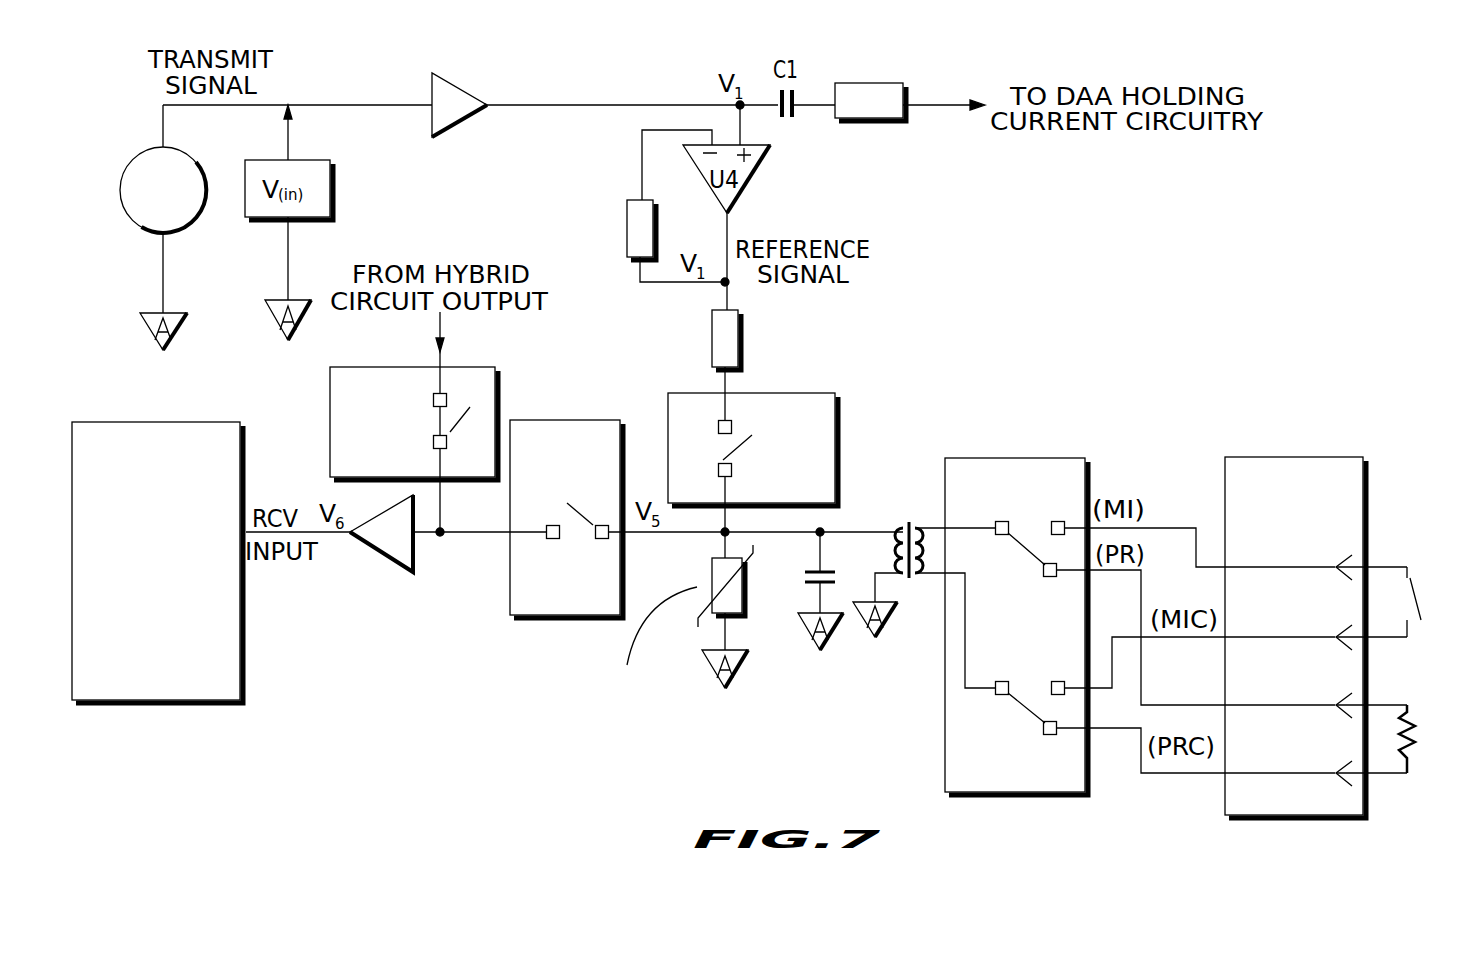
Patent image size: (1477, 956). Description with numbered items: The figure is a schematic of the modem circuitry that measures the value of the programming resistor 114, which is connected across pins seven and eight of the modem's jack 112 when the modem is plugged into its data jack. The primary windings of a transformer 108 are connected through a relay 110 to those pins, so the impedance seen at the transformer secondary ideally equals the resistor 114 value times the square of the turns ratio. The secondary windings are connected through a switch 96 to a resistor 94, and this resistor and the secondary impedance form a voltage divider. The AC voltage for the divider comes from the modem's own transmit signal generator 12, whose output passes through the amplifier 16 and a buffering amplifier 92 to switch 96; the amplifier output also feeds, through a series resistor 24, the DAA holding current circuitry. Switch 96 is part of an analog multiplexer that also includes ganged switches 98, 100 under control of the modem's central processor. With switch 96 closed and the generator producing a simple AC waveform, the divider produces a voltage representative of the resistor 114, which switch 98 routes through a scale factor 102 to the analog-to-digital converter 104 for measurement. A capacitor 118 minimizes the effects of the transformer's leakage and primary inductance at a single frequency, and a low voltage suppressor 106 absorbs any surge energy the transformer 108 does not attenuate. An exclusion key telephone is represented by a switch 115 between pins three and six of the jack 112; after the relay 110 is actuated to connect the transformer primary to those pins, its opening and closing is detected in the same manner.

The transmit signal generator 12 is at (120, 190).
The amplifier 16 is at (470, 93).
The resistor R1 to DAA holding current circuitry 24 is at (903, 83).
The buffering amplifier 92 is at (592, 203).
The resistor 94 is at (710, 315).
The switch 96 is at (835, 393).
The switch 98 is at (565, 420).
The switch 100 is at (495, 367).
The scale factor 102 is at (368, 547).
The analog-to-digital converter 104 is at (72, 422).
The low voltage suppressor 106 is at (742, 613).
The transformer 108 is at (905, 520).
The relay 110 is at (947, 458).
The jack 112 is at (1225, 457).
The programming resistor 114 is at (1415, 738).
The switch 115 is at (1415, 593).
The capacitor 118 is at (802, 573).